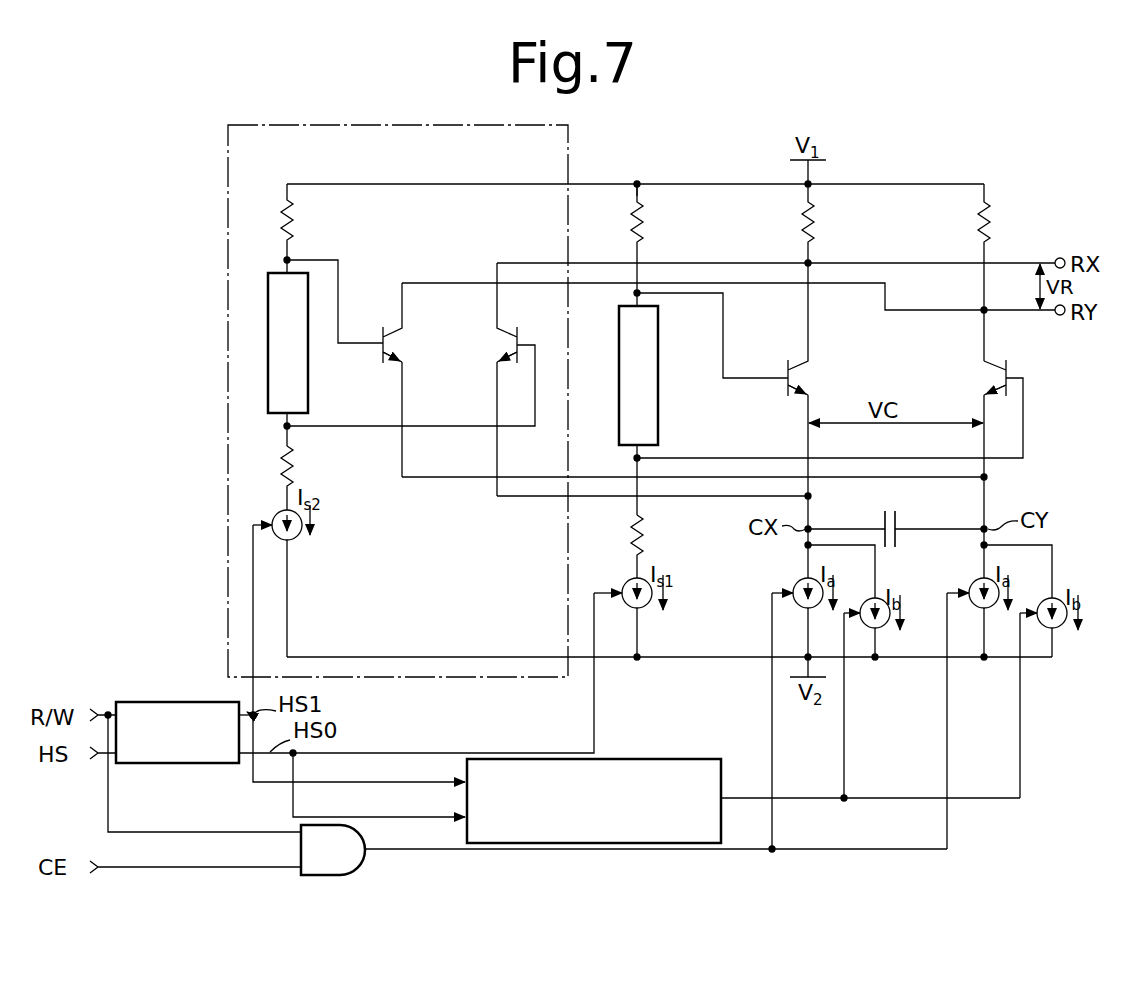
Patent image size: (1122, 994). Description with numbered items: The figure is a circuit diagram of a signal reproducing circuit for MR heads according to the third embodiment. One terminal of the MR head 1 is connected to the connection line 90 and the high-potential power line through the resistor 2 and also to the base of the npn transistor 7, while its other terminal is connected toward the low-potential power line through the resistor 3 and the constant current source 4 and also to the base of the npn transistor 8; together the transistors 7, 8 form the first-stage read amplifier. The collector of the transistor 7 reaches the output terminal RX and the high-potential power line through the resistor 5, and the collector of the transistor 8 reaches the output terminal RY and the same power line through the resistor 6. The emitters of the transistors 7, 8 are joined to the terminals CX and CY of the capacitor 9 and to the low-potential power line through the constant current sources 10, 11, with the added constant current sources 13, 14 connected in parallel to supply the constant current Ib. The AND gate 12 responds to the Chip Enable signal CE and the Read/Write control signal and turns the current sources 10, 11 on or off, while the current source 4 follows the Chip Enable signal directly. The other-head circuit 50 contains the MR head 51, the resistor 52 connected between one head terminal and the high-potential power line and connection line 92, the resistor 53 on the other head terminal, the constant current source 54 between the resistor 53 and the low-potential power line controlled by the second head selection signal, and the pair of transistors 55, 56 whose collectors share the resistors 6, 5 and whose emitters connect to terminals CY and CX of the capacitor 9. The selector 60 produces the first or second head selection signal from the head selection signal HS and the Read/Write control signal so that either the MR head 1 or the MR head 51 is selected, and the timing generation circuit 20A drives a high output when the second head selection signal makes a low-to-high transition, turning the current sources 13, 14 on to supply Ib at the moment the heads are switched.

The other-head circuit 50 is at (226, 183).
The connection line 92 is at (300, 177).
The resistor 52 is at (283, 228).
The MR head 51 is at (308, 378).
The transistor 55 is at (398, 342).
The transistor 56 is at (505, 345).
The resistor 53 is at (283, 470).
The constant current source 54 is at (295, 537).
The resistor 2 is at (633, 228).
The connection line 90 is at (648, 198).
The resistor 5 is at (803, 228).
The resistor 6 is at (979, 226).
The MR head 1 is at (619, 371).
The npn transistor 7 is at (803, 379).
The npn transistor 8 is at (990, 379).
The capacitor 9 is at (900, 524).
The resistor 3 is at (633, 536).
The constant current source 4 is at (627, 584).
The constant current source 10 is at (799, 583).
The constant current source 11 is at (977, 583).
The constant current source 13 is at (884, 626).
The constant current source 14 is at (1060, 627).
The selector 60 is at (178, 702).
The AND gate 12 is at (368, 857).
The timing generation circuit 20A is at (663, 759).